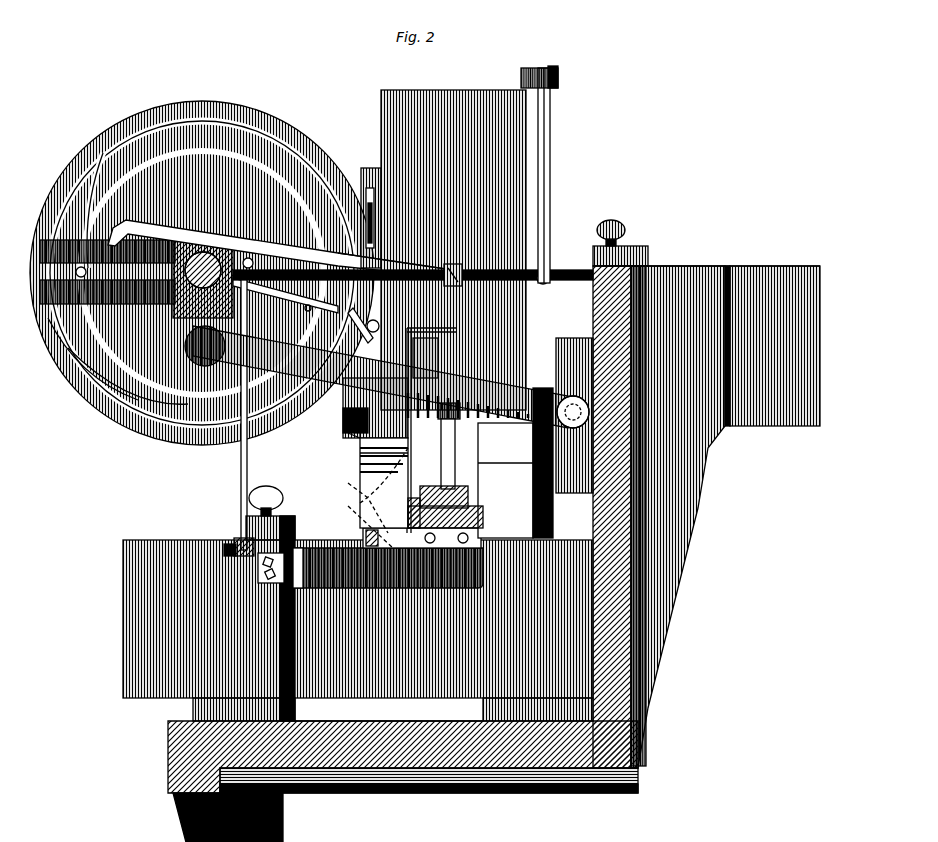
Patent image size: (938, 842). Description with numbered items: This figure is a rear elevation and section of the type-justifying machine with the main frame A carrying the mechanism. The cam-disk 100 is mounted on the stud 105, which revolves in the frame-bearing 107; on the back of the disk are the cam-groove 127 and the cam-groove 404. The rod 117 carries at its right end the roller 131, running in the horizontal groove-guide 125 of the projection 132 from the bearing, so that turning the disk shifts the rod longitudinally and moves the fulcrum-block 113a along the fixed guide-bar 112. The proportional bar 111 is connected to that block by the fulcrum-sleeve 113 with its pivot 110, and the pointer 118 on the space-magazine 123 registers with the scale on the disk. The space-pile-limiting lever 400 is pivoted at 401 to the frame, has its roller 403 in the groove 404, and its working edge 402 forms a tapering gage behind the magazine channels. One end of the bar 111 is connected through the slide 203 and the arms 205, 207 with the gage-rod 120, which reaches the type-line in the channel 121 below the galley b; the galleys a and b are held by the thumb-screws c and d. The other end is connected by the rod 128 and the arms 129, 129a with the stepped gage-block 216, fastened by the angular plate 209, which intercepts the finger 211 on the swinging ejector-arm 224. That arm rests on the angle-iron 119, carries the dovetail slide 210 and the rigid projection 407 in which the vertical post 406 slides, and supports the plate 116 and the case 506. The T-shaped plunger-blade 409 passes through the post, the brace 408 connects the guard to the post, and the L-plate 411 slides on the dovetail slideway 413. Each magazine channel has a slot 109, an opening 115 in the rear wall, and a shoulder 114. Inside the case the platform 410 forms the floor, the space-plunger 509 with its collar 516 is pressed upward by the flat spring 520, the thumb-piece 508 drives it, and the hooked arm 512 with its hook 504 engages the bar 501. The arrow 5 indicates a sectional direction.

The cam-disk 100 is at (197, 93).
The stud 105 is at (200, 205).
The projection 132 is at (93, 210).
The roller 131 is at (55, 345).
The cam-groove 127 is at (75, 385).
The groove-guide 125 is at (107, 272).
The frame-bearing 107 is at (210, 235).
The rod 117 is at (165, 218).
The proportional bar 111 is at (245, 250).
The bar 501 is at (330, 245).
The guide-bar 112 is at (285, 295).
The arrow 5 is at (306, 295).
The pointer 118 is at (350, 305).
The cam-groove 404 is at (358, 318).
The pivot 110 is at (455, 262).
The fulcrum-block 113a is at (445, 256).
The fulcrum-sleeve 113 is at (455, 280).
The rod 128 is at (232, 458).
The thumb-screw d is at (258, 480).
The space-magazine 123 is at (396, 90).
The case 506 is at (364, 160).
The hook 504 is at (361, 180).
The hooked arm 512 is at (362, 195).
The gage-rod 120 is at (542, 178).
The slide 203 is at (513, 68).
The slide-arm 207 is at (545, 58).
The arm 205 is at (590, 258).
The thumb-screw c is at (617, 220).
The galley b is at (786, 258).
The pivot 401 is at (578, 420).
The main frame A is at (160, 737).
The angle-iron 119 is at (335, 580).
The galley a is at (380, 693).
The arm 129 is at (226, 536).
The finger 211 is at (420, 575).
The arm 129a is at (372, 578).
The angular plate 209 is at (470, 540).
The space-pile-limiting gage or lever 400 is at (310, 342).
The opening 115 is at (560, 395).
The bent bar or brace 408 is at (435, 385).
The rigid projection 407 is at (448, 322).
The vertical post 406 is at (430, 350).
The thumb-piece 508 is at (335, 385).
The working edge 402 is at (340, 400).
The space-plunger 509 is at (336, 407).
The projection or roller 403 is at (352, 425).
The L-plate 411 is at (384, 483).
The dovetail slideway 413 is at (384, 475).
The collar 516 is at (352, 432).
The flat bifurcated spring 520 is at (352, 447).
The stepped gage-block 216 is at (340, 475).
The plate 116 is at (340, 498).
The plunger-blade 409 is at (448, 411).
The platform 410 is at (447, 440).
The slot 109 is at (515, 463).
The shoulder 114 is at (501, 469).
The dovetail slide 210 is at (460, 485).
The swinging ejector-arm 224 is at (475, 500).
The channel 121 is at (475, 510).